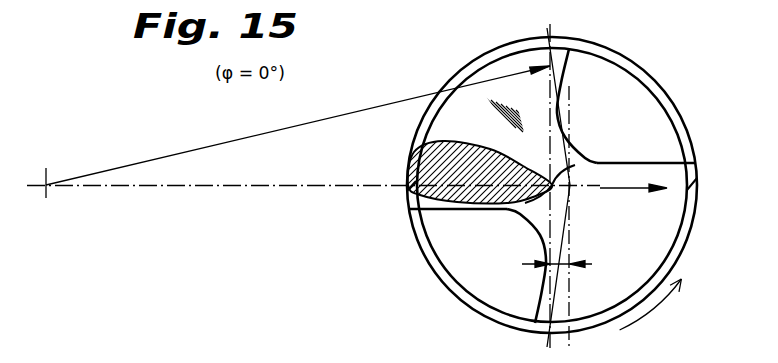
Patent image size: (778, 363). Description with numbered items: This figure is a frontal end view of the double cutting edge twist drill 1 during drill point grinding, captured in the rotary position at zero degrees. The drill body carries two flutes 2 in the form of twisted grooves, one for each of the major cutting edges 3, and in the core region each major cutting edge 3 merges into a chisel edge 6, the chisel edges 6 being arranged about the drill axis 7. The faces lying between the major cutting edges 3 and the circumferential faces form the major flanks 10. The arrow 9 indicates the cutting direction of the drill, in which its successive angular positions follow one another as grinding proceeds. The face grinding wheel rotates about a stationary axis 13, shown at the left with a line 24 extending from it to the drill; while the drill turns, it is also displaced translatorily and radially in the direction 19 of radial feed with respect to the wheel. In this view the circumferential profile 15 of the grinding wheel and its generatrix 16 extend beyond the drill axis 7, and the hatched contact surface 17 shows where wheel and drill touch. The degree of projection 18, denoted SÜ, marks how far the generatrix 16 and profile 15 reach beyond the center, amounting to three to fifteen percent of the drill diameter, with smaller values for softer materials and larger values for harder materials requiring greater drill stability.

The twist drill 1 is at (657, 77).
The flutes 2 is at (655, 130).
The major cutting edges 3 is at (638, 161).
The chisel edges 6 is at (563, 174).
The drill axis 7 is at (553, 188).
The cutting direction 9 is at (674, 290).
The major flanks 10 is at (493, 70).
The stationary axis 13 is at (50, 182).
The circumferential profile of grinding wheel 15 is at (565, 98).
The generatrix of grinding wheel 16 is at (425, 214).
The contact surface of grinding wheel 17 is at (424, 163).
The degree of projection 18 is at (558, 268).
The direction of radial feed 19 is at (629, 190).
The reference line 24 is at (398, 102).